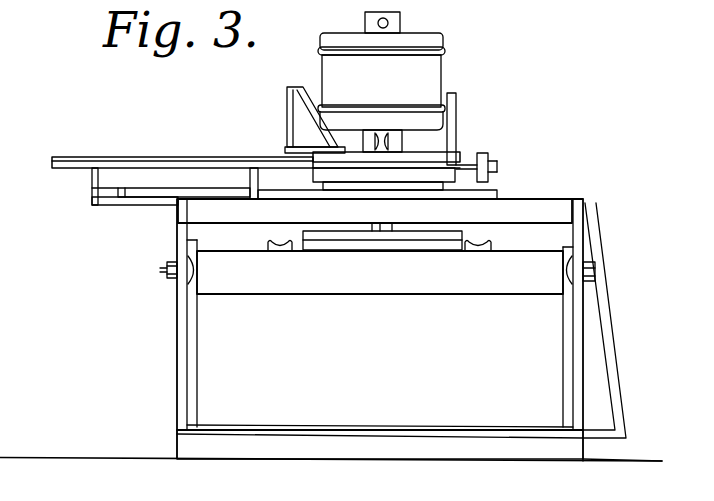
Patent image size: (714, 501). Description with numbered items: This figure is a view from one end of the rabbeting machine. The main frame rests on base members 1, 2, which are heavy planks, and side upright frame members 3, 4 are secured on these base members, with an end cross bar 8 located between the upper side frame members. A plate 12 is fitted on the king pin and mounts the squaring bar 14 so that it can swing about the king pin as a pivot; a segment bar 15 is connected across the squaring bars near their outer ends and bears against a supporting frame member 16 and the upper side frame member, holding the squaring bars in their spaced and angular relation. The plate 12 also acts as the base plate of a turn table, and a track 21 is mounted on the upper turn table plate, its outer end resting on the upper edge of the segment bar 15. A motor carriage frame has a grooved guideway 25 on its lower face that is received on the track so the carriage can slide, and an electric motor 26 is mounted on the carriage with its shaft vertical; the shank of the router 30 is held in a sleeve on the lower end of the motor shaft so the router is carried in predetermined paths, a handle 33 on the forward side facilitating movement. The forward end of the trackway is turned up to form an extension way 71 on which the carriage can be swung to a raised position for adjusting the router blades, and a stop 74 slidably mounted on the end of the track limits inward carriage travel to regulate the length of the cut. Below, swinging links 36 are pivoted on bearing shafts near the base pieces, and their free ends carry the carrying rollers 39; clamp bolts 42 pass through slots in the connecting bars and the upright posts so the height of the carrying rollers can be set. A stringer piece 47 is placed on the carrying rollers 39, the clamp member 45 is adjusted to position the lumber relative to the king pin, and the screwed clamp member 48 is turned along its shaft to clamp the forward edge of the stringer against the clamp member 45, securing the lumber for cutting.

The base member 1 is at (285, 450).
The base member 2 is at (514, 455).
The side upright frame member 3 is at (180, 345).
The side upright frame member 4 is at (585, 381).
The end cross bar 8 is at (563, 205).
The plate 12 is at (503, 190).
The squaring bar 14 is at (150, 197).
The segment bar 15 is at (92, 195).
The supporting frame member 16 is at (103, 202).
The track 21 is at (124, 166).
The grooved guideway 25 is at (428, 160).
The electric motor 26 is at (430, 70).
The router 30 is at (378, 232).
The handle 33 is at (297, 118).
The swinging link 36 is at (197, 378).
The carrying roller 39 is at (522, 288).
The clamp bolt 42 is at (166, 270).
The clamp member 45 is at (478, 252).
The stringer piece 47 is at (392, 240).
The screwed clamp member 48 is at (286, 250).
The extension way 71 is at (452, 132).
The stop 74 is at (490, 167).